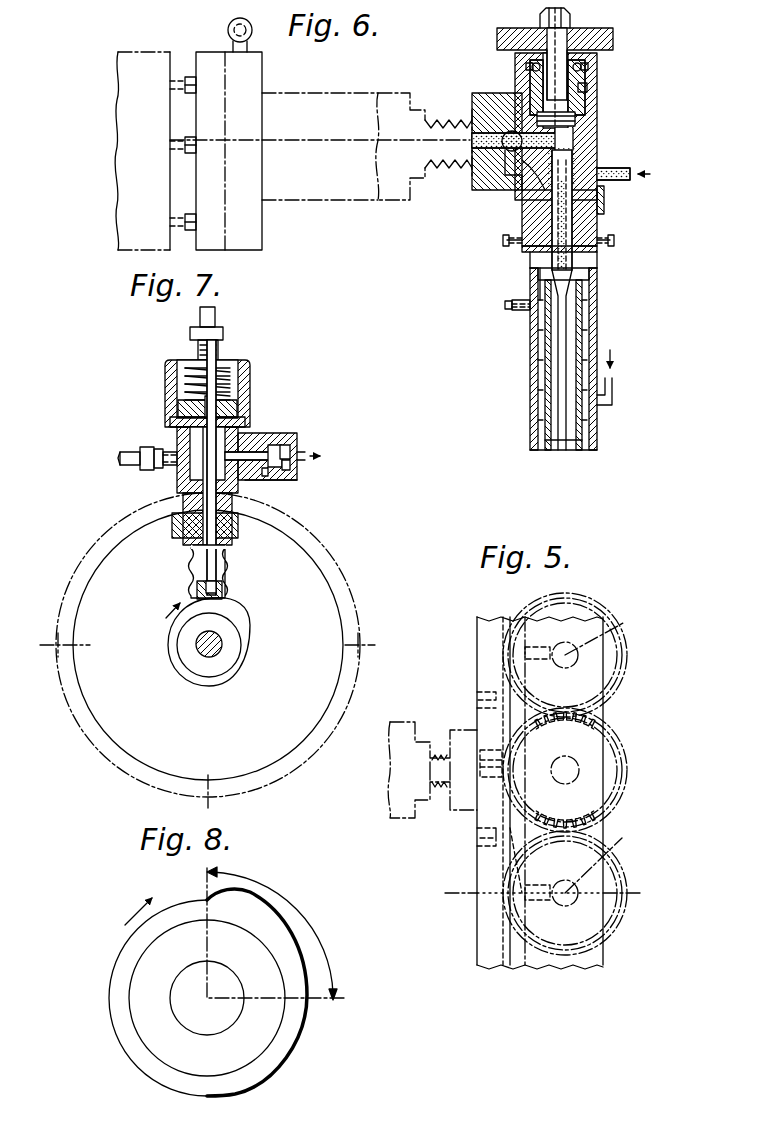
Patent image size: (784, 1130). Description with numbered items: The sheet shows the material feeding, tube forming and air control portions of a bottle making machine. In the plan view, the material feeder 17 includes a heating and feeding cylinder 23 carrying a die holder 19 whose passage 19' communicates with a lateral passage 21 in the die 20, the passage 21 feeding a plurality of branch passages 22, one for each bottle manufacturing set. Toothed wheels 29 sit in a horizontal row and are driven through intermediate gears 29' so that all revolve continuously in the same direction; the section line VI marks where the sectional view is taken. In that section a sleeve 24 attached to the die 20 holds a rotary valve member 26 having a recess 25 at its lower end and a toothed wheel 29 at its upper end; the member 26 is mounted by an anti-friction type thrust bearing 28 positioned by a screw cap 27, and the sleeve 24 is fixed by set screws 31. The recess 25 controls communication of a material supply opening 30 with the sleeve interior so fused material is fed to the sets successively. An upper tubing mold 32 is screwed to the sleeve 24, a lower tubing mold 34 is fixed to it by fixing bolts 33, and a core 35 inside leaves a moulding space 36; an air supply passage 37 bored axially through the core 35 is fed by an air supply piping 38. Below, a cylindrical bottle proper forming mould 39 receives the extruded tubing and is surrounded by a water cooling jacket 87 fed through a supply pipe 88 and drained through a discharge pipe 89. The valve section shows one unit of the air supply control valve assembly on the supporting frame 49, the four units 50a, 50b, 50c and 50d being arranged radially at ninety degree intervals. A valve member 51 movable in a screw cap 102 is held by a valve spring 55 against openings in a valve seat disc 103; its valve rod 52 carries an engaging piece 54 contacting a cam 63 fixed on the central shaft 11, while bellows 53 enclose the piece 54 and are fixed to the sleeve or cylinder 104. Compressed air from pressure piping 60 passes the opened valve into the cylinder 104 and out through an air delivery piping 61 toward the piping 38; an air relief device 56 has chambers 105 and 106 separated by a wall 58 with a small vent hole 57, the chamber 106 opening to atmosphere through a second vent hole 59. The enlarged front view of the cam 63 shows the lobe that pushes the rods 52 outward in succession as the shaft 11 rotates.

In FIG. 7, the shaft 11 is at (196, 648).
In FIG. 6, the material feeder 17 is at (177, 33).
In FIG. 6, the die holder 19 is at (320, 132).
In FIG. 5, the die holder 19 is at (445, 761).
In FIG. 6, the passage 19' is at (424, 132).
In FIG. 6, the die 20 is at (484, 92).
In FIG. 5, the die 20 is at (482, 940).
In FIG. 6, the lateral passage 21 is at (478, 185).
In FIG. 5, the lateral passage 21 is at (508, 830).
In FIG. 6, the branch passages 22 is at (519, 150).
In FIG. 5, the branch passages 22 is at (540, 647).
In FIG. 6, the heating and feeding cylinder 23 is at (136, 62).
In FIG. 6, the sleeve 24 is at (535, 182).
In FIG. 6, the recess 25 is at (575, 146).
In FIG. 6, the rotary valve member 26 is at (588, 76).
In FIG. 6, the screw cap 27 is at (530, 75).
In FIG. 6, the anti-friction type thrust bearing 28 is at (597, 70).
In FIG. 6, the toothed wheel 29 is at (572, 29).
In FIG. 5, the toothed wheel 29 is at (587, 774).
In FIG. 5, the intermediate gears 29' is at (589, 770).
In FIG. 6, the material supply opening 30 is at (557, 139).
In FIG. 5, the material supply opening 30 is at (599, 761).
In FIG. 6, the set screws 31 is at (588, 90).
In FIG. 6, the upper tubing mold 32 is at (583, 228).
In FIG. 6, the fixing bolts 33 is at (610, 242).
In FIG. 6, the lower tubing mold 34 is at (535, 265).
In FIG. 6, the core 35 is at (580, 262).
In FIG. 6, the moulding space 36 is at (600, 210).
In FIG. 6, the air supply passage 37 is at (562, 360).
In FIG. 6, the air supply piping 38 is at (612, 180).
In FIG. 6, the bottle proper forming mould 39 is at (520, 370).
In FIG. 7, the supporting frame 49 is at (352, 582).
In FIG. 7, the drum position a 50a is at (237, 349).
In FIG. 7, the drum position b 50b is at (368, 635).
In FIG. 7, the drum position c 50c is at (227, 798).
In FIG. 7, the drum position d 50d is at (56, 639).
In FIG. 7, the valve member 51 is at (240, 398).
In FIG. 7, the valve rod 52 is at (207, 440).
In FIG. 7, the bellows 53 is at (188, 566).
In FIG. 7, the engaging piece 54 is at (222, 588).
In FIG. 7, the valve spring 55 is at (182, 388).
In FIG. 7, the air relief device 56 is at (288, 446).
In FIG. 7, the small vent hole 57 is at (275, 446).
In FIG. 7, the wall 58 is at (270, 472).
In FIG. 7, the second vent hole 59 is at (300, 450).
In FIG. 7, the pressure piping 60 is at (215, 314).
In FIG. 7, the air delivery piping 61 is at (130, 452).
In FIG. 7, the cam 63 is at (243, 643).
In FIG. 8, the cam 63 is at (296, 1018).
In FIG. 6, the water cooling jacket 87 is at (597, 334).
In FIG. 6, the supply pipe 88 is at (612, 406).
In FIG. 6, the discharge pipe 89 is at (518, 312).
In FIG. 7, the screw cap 102 is at (165, 370).
In FIG. 7, the valve seat disc 103 is at (168, 422).
In FIG. 7, the sleeve or cylinder 104 is at (177, 487).
In FIG. 7, the chamber 105 is at (262, 482).
In FIG. 7, the chamber 106 is at (292, 462).
In FIG. 5, the section line VI is at (542, 893).